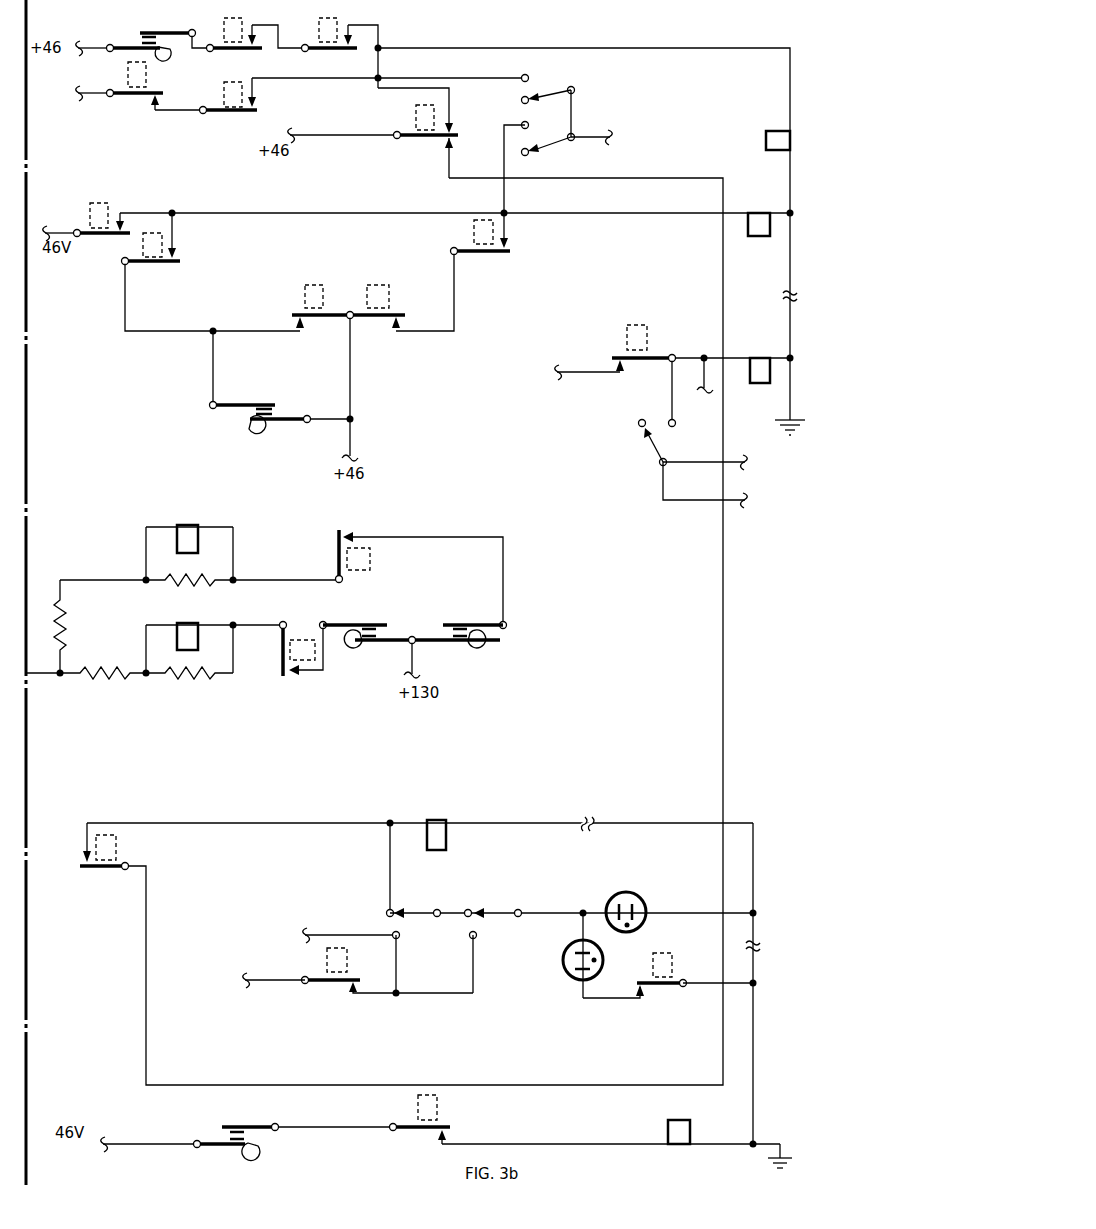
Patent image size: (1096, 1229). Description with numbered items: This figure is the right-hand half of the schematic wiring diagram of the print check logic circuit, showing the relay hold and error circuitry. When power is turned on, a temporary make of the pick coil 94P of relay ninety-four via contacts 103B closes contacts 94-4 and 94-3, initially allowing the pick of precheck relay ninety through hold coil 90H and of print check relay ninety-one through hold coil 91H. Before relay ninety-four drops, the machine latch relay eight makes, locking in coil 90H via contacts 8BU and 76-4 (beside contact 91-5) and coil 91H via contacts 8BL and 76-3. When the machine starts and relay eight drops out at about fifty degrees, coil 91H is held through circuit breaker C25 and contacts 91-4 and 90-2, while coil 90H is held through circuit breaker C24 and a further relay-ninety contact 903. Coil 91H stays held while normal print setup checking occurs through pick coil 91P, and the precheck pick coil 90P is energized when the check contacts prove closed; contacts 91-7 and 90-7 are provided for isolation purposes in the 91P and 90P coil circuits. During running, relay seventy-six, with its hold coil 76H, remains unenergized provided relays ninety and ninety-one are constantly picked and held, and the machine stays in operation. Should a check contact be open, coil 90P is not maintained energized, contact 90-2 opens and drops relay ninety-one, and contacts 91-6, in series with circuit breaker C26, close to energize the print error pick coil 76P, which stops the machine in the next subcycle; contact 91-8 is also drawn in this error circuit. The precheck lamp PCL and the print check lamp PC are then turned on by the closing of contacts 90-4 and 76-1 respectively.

The circuit breaker C25 is at (140, 35).
The contact of precheck relay 90 90-2 is at (235, 44).
The contact of print check relay 91 91-4 is at (330, 44).
The contact of print check error relay 76 76-3 is at (135, 91).
The contact of machine relay 8 8BL is at (258, 106).
The contact of relay 94 94-3 is at (426, 132).
The hold coil of print check relay 91 91H is at (773, 131).
The contact of relay 94 94-4 is at (102, 228).
The contact of precheck relay 90 903 is at (179, 259).
The contact of machine relay 8 8BU is at (514, 246).
The hold coil of precheck relay 90 90H is at (748, 236).
The contact of print check relay 91 91-5 is at (321, 310).
The contact of print check error relay 76 76-4 is at (376, 310).
The contact 103B is at (644, 352).
The pick coil of relay 94 94P is at (759, 385).
The circuit breaker C24 is at (240, 432).
The pick coil of print check relay 91 91P is at (186, 525).
The pick coil of precheck relay 90 90P is at (186, 623).
The contact of print check relay 91 91-7 is at (402, 579).
The contact of precheck relay 90 90-7 is at (290, 682).
The contact of print check error relay 76 76-1 is at (80, 862).
The hold coil of print check error relay 76 76H is at (446, 838).
The print check lamp PC is at (631, 893).
The precheck lamp PCL is at (601, 947).
The contact of precheck relay 90 90-4 is at (694, 981).
The contact of print check relay 91 91-8 is at (360, 967).
The circuit breaker C26 is at (264, 1161).
The contact of print check relay 91 91-6 is at (420, 1126).
The pick coil of print error relay 76 76P is at (690, 1128).